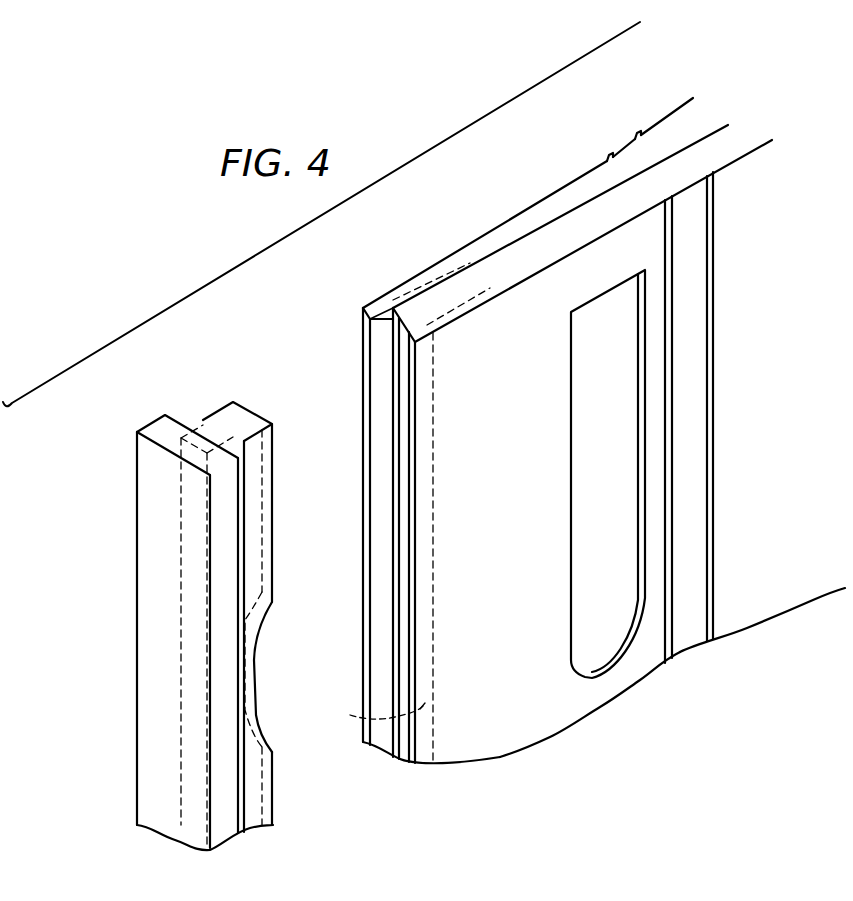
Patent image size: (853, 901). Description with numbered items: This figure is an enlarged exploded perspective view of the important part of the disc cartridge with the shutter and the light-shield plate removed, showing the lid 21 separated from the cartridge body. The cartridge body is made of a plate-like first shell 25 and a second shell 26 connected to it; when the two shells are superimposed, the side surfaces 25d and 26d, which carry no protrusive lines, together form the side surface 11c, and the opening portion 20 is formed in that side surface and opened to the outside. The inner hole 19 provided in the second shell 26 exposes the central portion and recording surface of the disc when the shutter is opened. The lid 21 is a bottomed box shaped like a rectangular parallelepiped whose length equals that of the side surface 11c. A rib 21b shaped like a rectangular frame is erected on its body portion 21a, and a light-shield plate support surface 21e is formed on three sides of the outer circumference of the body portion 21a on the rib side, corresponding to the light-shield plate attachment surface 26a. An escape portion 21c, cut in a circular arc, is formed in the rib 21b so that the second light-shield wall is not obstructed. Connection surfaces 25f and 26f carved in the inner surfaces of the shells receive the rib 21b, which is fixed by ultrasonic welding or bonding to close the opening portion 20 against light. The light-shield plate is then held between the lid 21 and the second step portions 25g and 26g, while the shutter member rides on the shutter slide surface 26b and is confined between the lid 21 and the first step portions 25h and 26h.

The side surface 11c is at (379, 335).
The inner hole 19 is at (636, 522).
The opening portion 20 is at (378, 358).
The lid 21 is at (150, 618).
The body portion 21a is at (155, 513).
The rib 21b is at (228, 426).
The escape portion 21c is at (255, 650).
The light-shield plate support surface 21e is at (247, 512).
The first shell 25 is at (503, 222).
The side surface 25d is at (362, 337).
The connection surface 25f is at (380, 460).
The second step portion 25g is at (637, 135).
The first step portion 25h is at (609, 161).
The second shell 26 is at (572, 710).
The light-shield plate attachment surface 26a is at (688, 638).
The shutter slide surface 26b is at (497, 732).
The side surface 26d is at (412, 383).
The connection surface 26f is at (362, 718).
The second step portion 26g is at (707, 331).
The first step portion 26h is at (670, 249).